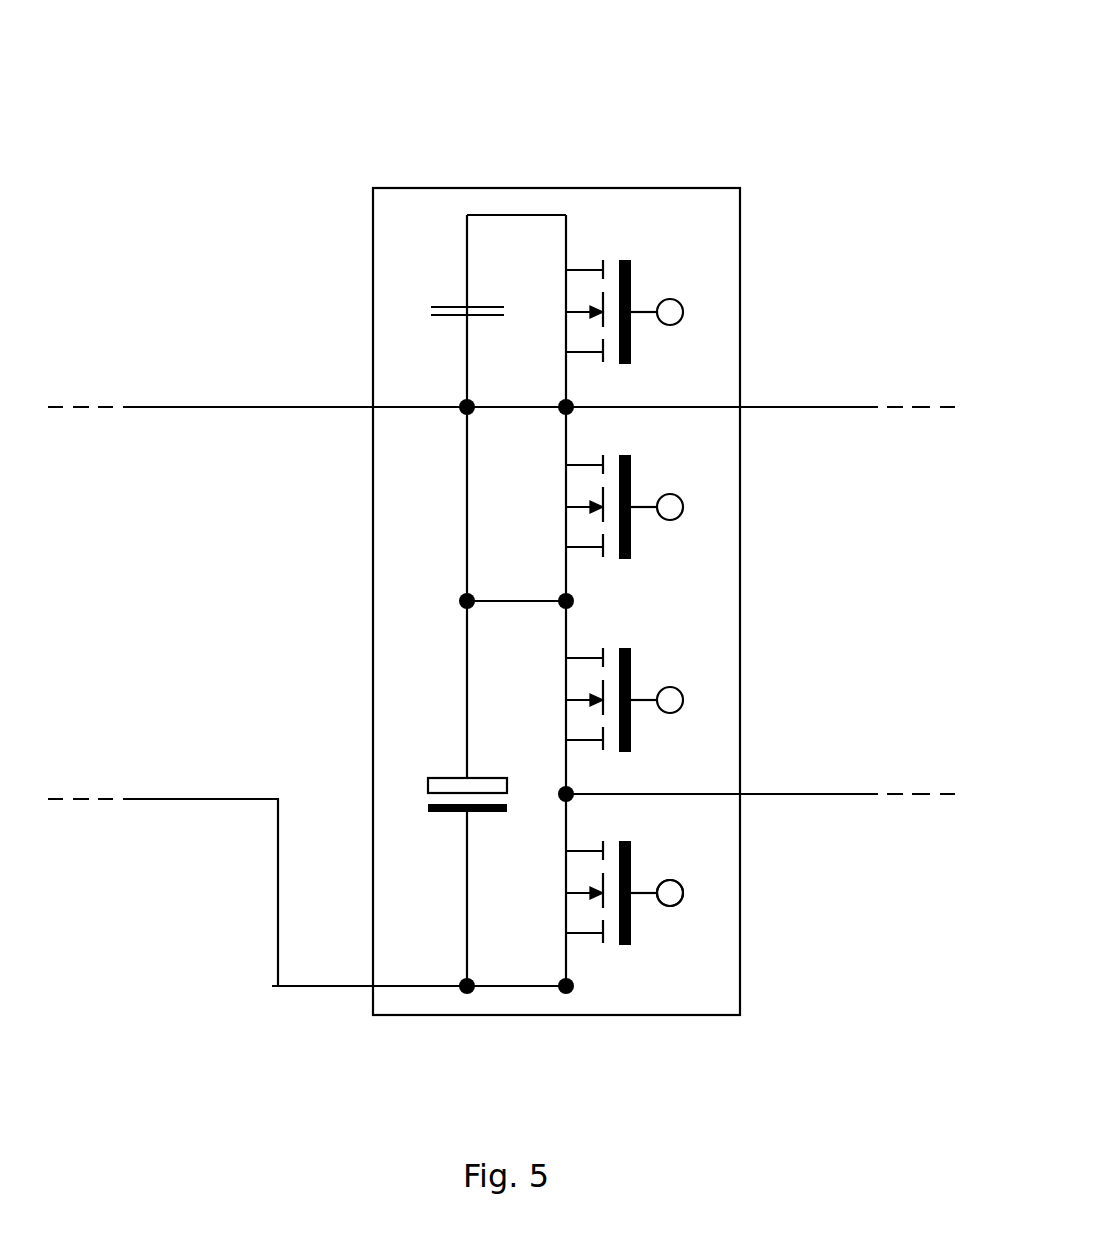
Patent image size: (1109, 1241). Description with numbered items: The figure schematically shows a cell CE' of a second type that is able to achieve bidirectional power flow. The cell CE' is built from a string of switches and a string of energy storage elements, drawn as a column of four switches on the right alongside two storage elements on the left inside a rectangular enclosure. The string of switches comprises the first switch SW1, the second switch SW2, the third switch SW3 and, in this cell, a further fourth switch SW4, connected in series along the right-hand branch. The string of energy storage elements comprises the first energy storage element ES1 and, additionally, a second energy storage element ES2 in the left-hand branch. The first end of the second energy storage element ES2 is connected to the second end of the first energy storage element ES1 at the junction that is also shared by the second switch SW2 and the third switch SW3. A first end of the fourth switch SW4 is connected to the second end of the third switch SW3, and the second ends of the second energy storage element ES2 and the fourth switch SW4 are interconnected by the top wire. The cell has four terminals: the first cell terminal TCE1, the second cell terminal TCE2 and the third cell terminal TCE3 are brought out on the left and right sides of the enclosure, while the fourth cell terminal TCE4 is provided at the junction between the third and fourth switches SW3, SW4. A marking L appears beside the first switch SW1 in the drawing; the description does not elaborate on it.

The cell CE' is at (887, 44).
The terminal connection element 1 TCE1 is at (161, 892).
The terminal connection element 2 TCE2 is at (392, 435).
The terminal connection element 3 TCE3 is at (760, 771).
The fourth cell terminal TCE4 is at (847, 381).
The first energy storage element ES1 is at (461, 770).
The second energy storage element ES2 is at (456, 292).
The switch 1 SW1 is at (637, 894).
The second switch SW2 is at (637, 700).
The third switch SW3 is at (637, 506).
The fourth switch SW4 is at (637, 286).
The load / gate terminal L is at (684, 867).